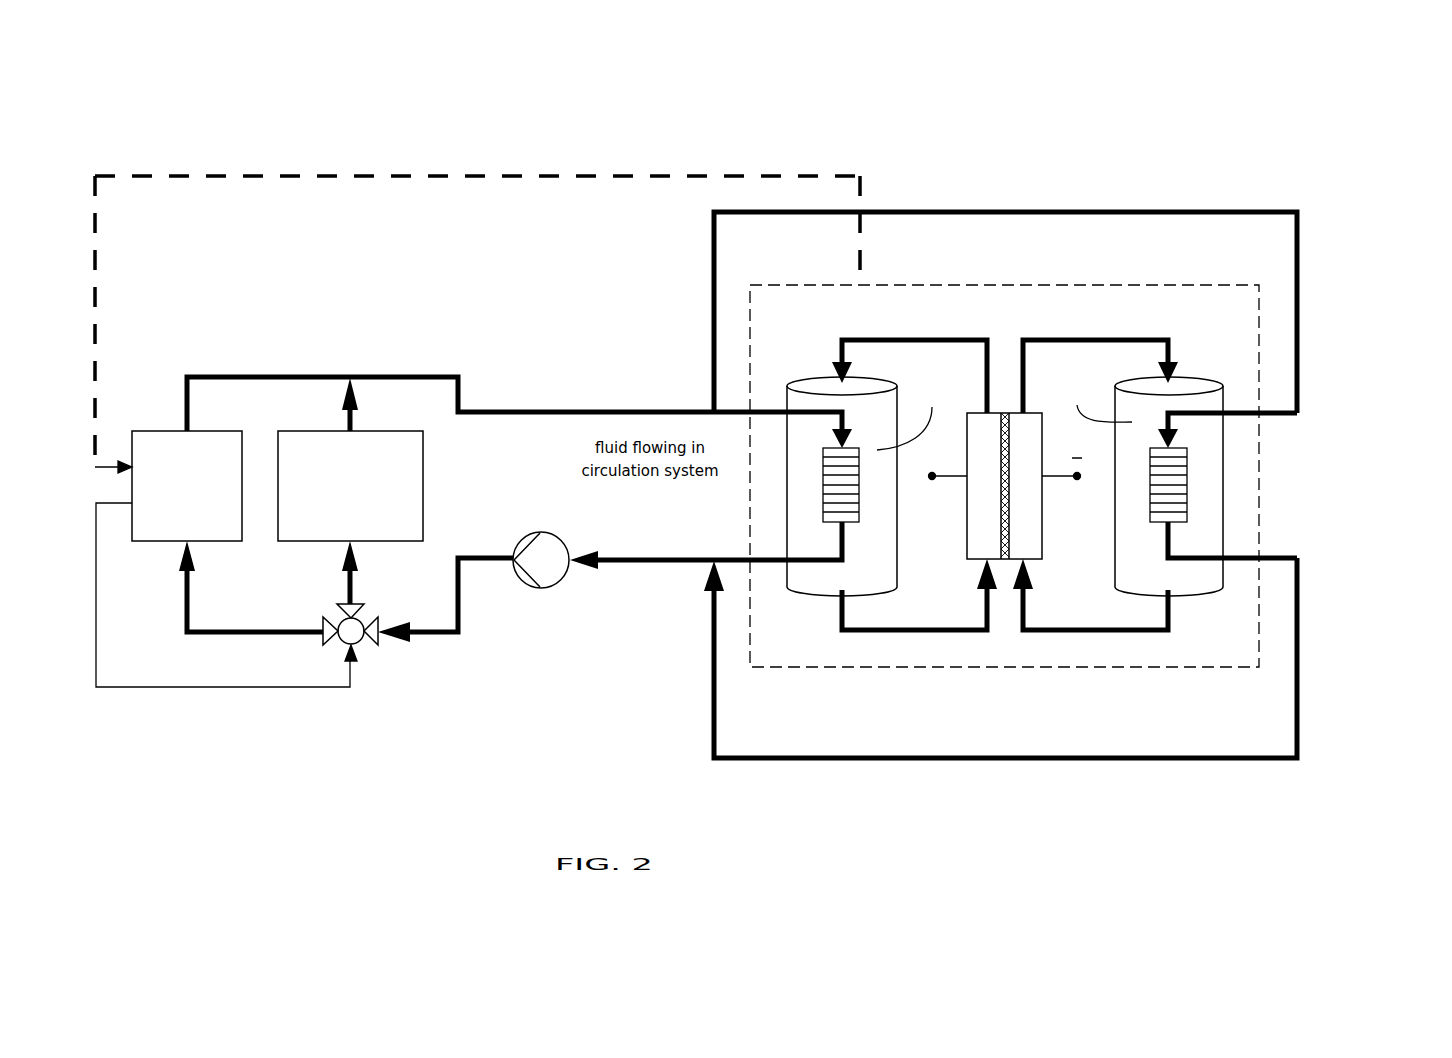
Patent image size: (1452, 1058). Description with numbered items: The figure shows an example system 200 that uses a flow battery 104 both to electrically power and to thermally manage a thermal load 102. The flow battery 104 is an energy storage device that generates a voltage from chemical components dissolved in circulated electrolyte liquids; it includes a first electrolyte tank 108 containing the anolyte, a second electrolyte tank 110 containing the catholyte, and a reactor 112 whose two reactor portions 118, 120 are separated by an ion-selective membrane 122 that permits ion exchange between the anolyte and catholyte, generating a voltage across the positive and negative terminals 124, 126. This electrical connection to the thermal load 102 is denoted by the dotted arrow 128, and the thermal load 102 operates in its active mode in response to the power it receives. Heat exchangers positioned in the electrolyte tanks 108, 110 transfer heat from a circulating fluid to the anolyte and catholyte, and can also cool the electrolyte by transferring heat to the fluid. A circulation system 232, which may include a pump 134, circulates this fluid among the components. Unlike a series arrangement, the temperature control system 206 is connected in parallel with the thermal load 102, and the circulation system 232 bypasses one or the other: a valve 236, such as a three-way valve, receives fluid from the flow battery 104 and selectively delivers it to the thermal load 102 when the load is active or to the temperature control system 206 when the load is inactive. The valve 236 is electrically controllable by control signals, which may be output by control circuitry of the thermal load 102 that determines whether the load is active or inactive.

The system 200 is at (122, 120).
The dotted arrow 128 is at (456, 176).
The circulation system 232 is at (263, 377).
The thermal load 102 is at (187, 486).
The temperature control system 206 is at (350, 486).
The valve 236 is at (360, 641).
The pump 134 is at (560, 581).
The flow battery 104 is at (1022, 285).
The first electrolyte tank 108 is at (818, 385).
The second electrolyte tank 110 is at (1187, 385).
The reactor 112 is at (1042, 448).
The reactor portion 118 is at (978, 524).
The reactor portion 120 is at (1033, 524).
The ion-selective membrane 122 is at (1003, 540).
The positive terminal 124 is at (955, 478).
The negative terminal 126 is at (1055, 478).